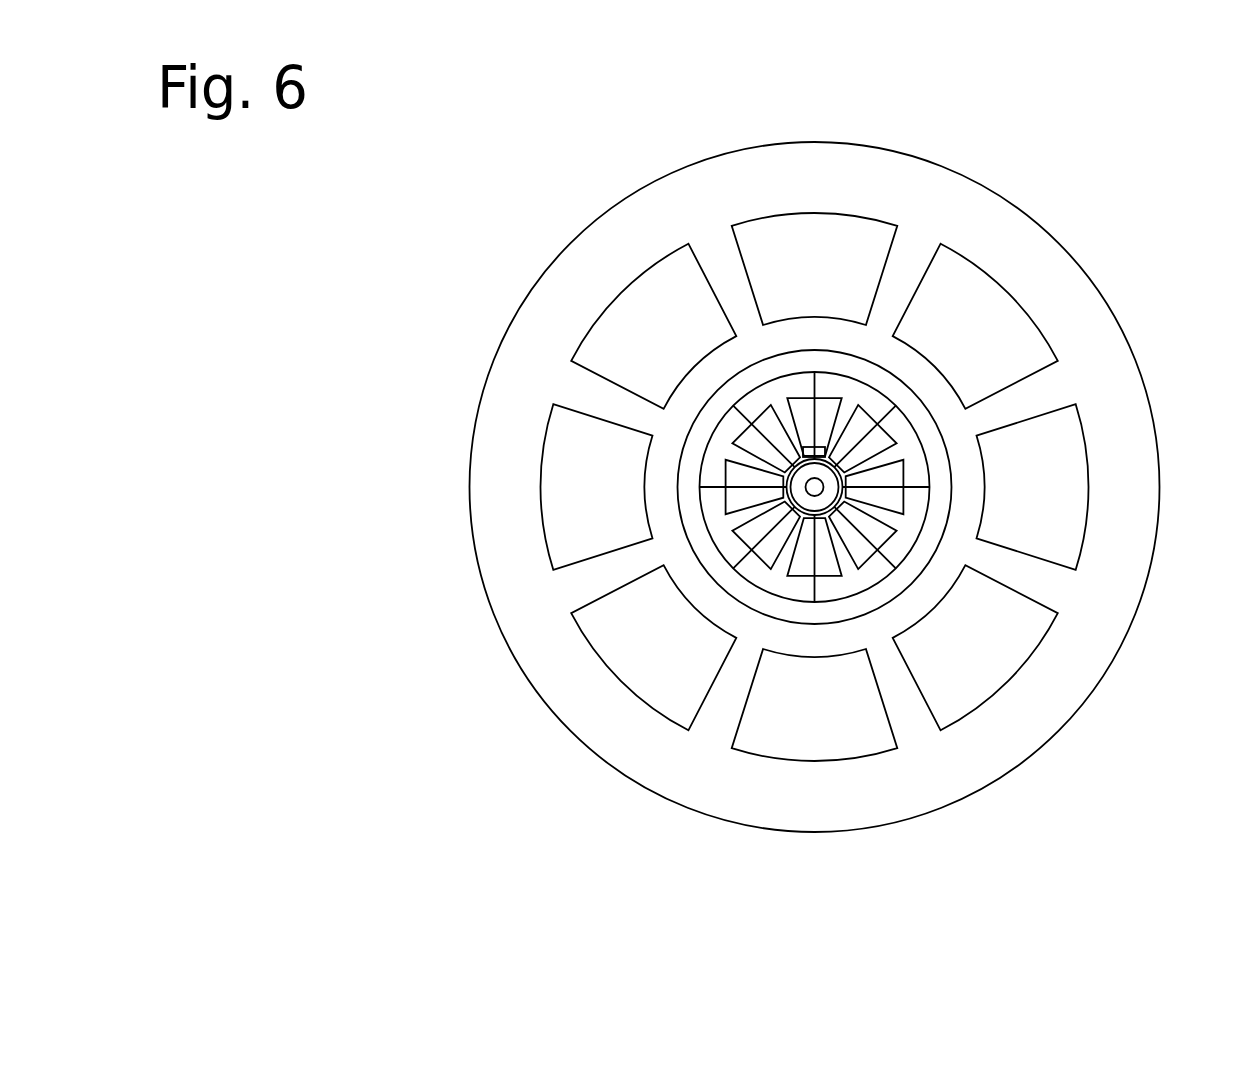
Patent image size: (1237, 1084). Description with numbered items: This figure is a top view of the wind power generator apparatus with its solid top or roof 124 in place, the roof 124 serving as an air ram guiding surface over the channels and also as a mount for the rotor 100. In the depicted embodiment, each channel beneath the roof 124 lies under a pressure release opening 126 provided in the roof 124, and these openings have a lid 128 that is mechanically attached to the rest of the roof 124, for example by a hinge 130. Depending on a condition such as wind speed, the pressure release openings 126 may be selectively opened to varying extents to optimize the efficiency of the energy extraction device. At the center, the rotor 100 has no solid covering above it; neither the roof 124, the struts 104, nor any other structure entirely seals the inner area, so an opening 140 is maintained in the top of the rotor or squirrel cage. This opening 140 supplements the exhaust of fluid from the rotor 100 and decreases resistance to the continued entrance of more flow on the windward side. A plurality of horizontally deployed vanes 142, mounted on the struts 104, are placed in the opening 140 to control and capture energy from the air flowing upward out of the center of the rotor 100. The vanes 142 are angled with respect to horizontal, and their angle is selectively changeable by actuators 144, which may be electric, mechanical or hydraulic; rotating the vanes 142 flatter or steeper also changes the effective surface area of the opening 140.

The rotor 100 is at (802, 472).
The struts 104 is at (712, 487).
The roof 124 is at (630, 736).
The pressure release opening 126 is at (1077, 487).
The lid 128 is at (986, 653).
The hinge 130 is at (1108, 405).
The opening 140 is at (910, 527).
The vanes 142 is at (830, 570).
The actuators 144 is at (828, 440).